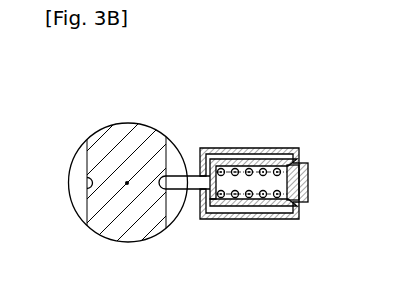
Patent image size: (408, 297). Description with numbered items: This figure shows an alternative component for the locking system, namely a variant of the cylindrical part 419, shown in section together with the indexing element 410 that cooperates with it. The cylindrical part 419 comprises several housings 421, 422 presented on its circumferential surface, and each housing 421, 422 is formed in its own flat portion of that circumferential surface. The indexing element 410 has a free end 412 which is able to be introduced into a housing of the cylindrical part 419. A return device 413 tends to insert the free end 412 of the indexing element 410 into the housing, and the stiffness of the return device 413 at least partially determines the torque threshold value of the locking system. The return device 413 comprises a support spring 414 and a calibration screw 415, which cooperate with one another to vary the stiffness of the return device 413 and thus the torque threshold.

The indexing element 410 is at (219, 139).
The free end 412 is at (184, 190).
The return device 413 is at (268, 160).
The support spring 414 is at (268, 205).
The calibration screw 415 is at (308, 183).
The cylindrical part 419 is at (121, 234).
The housing 421 is at (153, 167).
The housing 422 is at (82, 184).